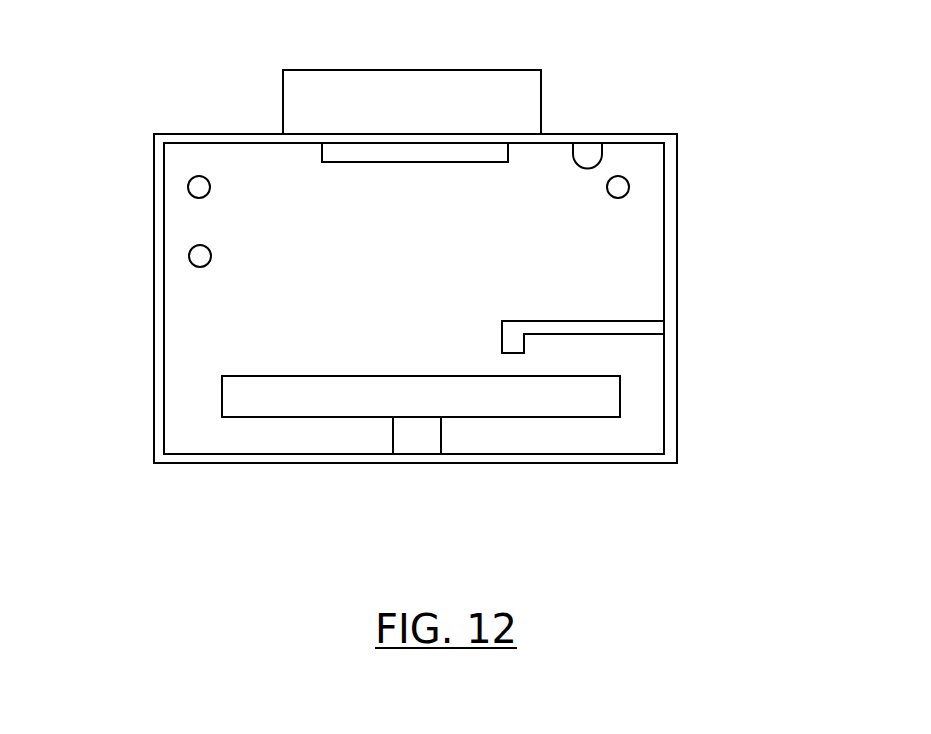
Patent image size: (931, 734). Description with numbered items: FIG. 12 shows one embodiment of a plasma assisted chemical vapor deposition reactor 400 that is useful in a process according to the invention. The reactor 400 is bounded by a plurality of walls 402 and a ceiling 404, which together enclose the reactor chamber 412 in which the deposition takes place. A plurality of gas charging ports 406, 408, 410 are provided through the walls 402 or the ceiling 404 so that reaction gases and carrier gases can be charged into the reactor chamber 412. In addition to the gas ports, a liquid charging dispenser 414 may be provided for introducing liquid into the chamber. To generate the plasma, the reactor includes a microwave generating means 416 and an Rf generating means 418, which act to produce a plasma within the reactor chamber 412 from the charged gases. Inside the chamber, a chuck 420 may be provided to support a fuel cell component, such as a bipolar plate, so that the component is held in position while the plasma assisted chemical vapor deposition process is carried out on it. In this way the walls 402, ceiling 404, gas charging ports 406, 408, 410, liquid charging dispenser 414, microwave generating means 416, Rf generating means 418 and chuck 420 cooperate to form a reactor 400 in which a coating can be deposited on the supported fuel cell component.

The plasma assisted chemical vapor deposition reactor 400 is at (655, 95).
The walls 402 is at (154, 306).
The ceiling 404 is at (599, 162).
The gas charging port 406 is at (191, 179).
The gas charging port 408 is at (193, 248).
The gas charging port 410 is at (628, 178).
The reactor chamber 412 is at (590, 249).
The liquid charging dispenser 414 is at (632, 336).
The microwave generating means 416 is at (322, 155).
The Rf generating means 418 is at (283, 88).
The chuck 420 is at (514, 417).